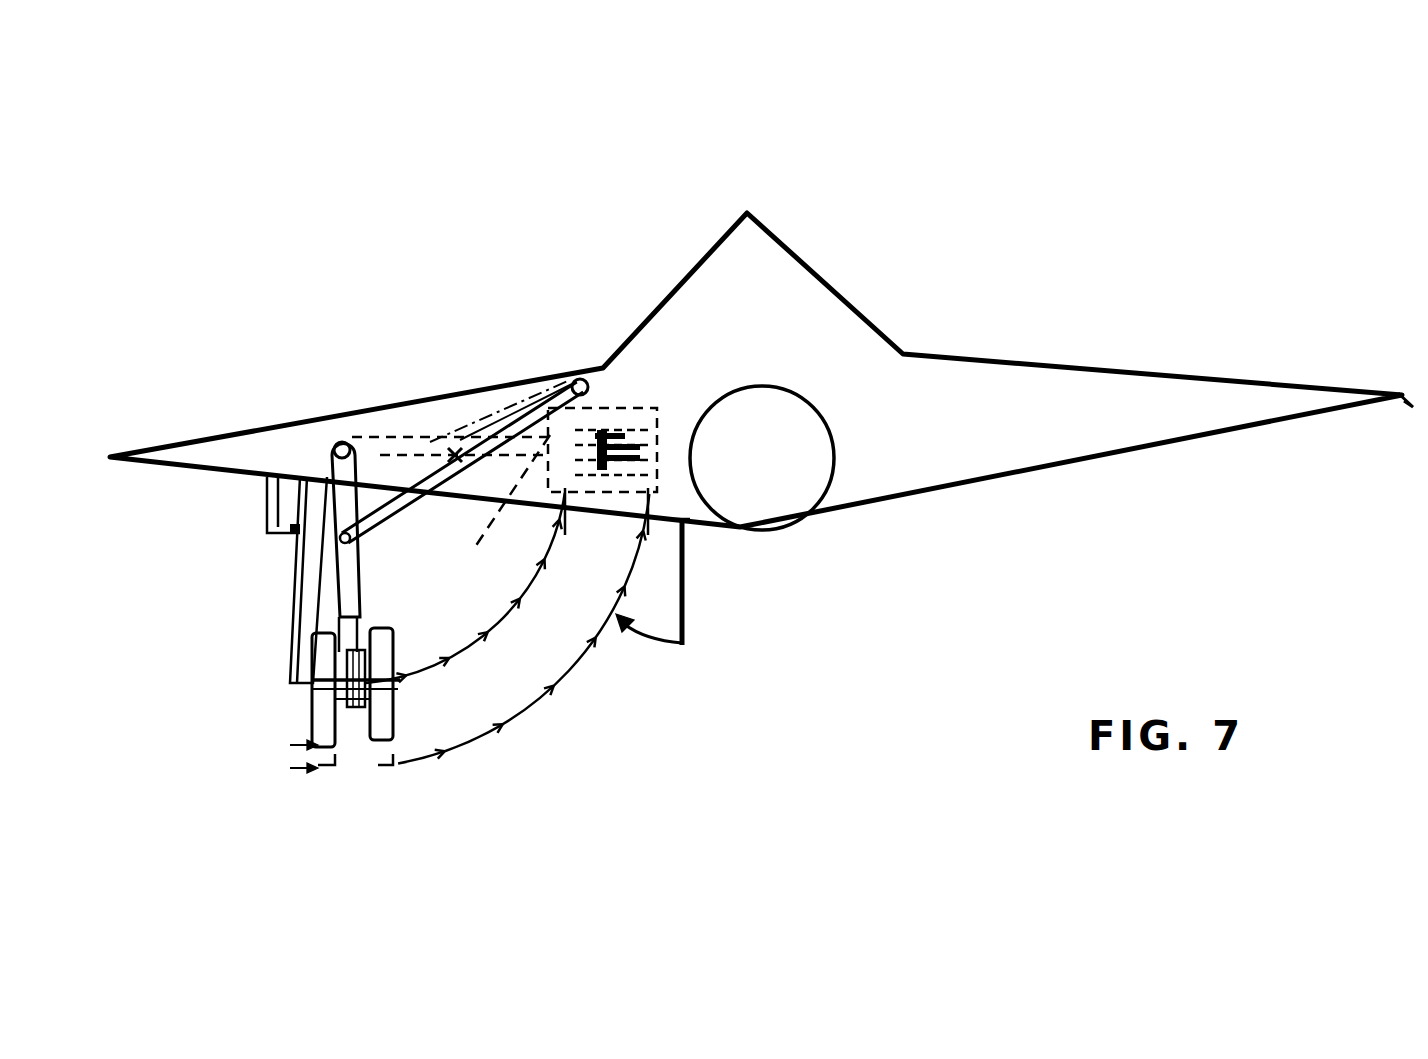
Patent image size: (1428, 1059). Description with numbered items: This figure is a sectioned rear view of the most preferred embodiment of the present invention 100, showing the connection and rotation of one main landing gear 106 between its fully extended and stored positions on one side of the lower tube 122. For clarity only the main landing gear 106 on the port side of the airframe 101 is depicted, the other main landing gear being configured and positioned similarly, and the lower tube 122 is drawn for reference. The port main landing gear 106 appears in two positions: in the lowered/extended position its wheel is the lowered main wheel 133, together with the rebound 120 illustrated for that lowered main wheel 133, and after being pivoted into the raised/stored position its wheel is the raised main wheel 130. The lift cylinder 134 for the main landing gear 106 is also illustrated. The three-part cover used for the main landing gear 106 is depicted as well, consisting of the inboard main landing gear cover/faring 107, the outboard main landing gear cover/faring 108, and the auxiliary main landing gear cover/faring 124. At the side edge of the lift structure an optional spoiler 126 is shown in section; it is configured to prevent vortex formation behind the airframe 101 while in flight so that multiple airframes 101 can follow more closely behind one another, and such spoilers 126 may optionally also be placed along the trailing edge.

The aircraft 100 is at (438, 146).
The airframe 101 is at (1012, 380).
The main landing gear 106 is at (350, 592).
The inboard main landing gear cover/faring 107 is at (688, 596).
The outboard main landing gear cover/faring 108 is at (295, 623).
The rebound 120 is at (281, 758).
The lower tube 122 is at (807, 470).
The auxiliary main landing gear cover/faring 124 is at (263, 513).
The spoiler 126 is at (1405, 402).
The raised main wheel 130 is at (605, 405).
The lowered main wheel 133 is at (397, 710).
The lift cylinder 134 is at (383, 503).